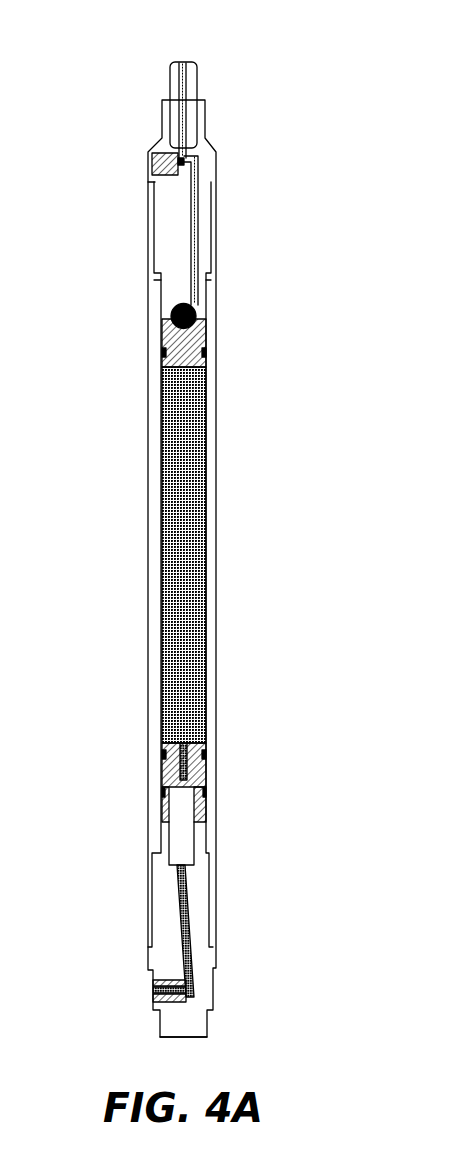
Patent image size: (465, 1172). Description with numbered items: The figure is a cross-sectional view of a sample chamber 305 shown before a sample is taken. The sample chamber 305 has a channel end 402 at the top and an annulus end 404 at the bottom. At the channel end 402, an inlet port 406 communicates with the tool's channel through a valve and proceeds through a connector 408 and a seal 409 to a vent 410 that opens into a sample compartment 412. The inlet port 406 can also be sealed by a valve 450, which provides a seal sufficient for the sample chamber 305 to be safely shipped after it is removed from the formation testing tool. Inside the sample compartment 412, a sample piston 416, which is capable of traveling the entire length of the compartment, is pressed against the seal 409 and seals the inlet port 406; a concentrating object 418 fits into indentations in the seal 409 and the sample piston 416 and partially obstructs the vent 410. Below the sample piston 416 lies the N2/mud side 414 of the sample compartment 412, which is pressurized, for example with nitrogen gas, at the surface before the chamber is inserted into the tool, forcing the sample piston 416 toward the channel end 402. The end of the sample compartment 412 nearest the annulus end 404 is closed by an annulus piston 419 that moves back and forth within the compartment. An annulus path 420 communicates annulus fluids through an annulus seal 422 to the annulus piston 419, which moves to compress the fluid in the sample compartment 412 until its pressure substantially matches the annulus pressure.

The sample chamber 305 is at (252, 44).
The channel end 402 is at (143, 57).
The annulus end 404 is at (253, 1009).
The inlet port 406 is at (188, 117).
The connector 408 is at (171, 90).
The seal 409 is at (160, 147).
The valve 450 is at (152, 167).
The vent 410 is at (197, 320).
The concentrating object 418 is at (172, 311).
The sample piston 416 is at (200, 357).
The sample compartment 412 is at (207, 510).
The N2/mud side 414 is at (180, 603).
The annulus piston 419 is at (205, 768).
The annulus path 420 is at (192, 903).
The annulus seal 422 is at (210, 960).